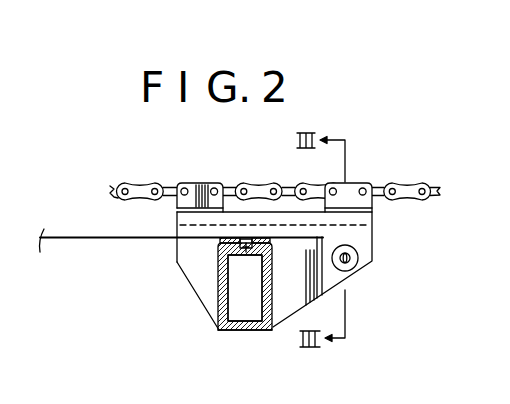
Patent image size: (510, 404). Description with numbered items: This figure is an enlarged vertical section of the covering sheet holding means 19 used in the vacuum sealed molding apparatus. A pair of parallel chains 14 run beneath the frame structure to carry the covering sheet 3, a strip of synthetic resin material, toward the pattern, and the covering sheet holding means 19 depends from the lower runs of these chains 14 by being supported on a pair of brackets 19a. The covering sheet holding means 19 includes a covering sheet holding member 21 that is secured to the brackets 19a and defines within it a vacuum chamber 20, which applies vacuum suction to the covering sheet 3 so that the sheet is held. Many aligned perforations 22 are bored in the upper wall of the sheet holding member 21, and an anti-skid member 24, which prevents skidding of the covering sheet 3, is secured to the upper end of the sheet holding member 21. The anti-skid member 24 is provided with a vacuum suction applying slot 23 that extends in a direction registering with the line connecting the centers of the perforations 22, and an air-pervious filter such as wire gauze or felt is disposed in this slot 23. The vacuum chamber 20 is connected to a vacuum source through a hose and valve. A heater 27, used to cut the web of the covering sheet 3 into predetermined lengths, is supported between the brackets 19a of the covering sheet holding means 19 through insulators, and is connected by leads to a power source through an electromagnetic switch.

The covering sheet 3 is at (82, 236).
The chains 14 is at (143, 185).
The covering sheet holding means 19 is at (386, 327).
The brackets 19a is at (207, 281).
The vacuum chamber 20 is at (244, 314).
The covering sheet holding member 21 is at (221, 331).
The perforations 22 is at (243, 256).
The vacuum suction applying slot 23 is at (222, 241).
The anti-skid member 24 is at (268, 244).
The heater 27 is at (358, 258).